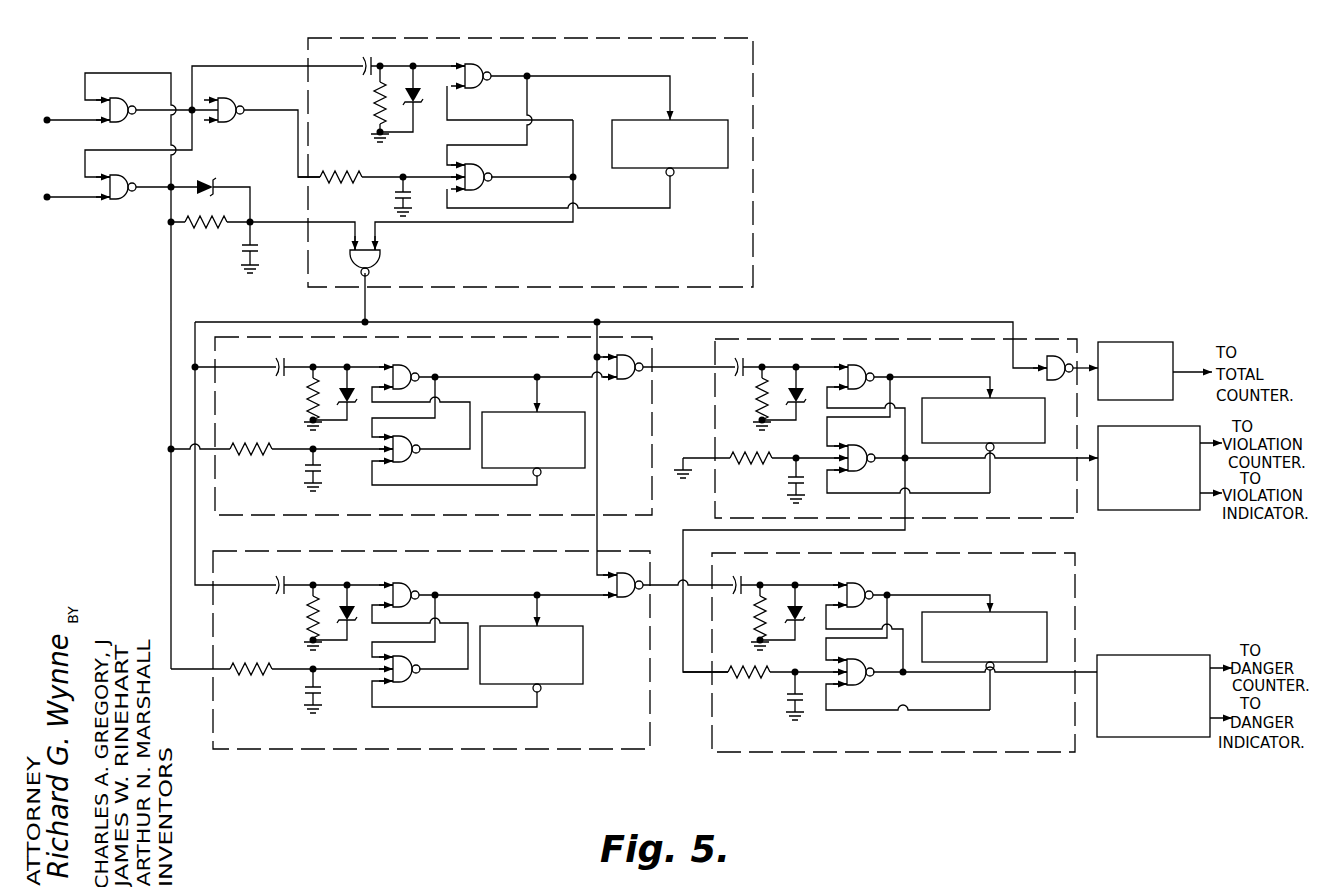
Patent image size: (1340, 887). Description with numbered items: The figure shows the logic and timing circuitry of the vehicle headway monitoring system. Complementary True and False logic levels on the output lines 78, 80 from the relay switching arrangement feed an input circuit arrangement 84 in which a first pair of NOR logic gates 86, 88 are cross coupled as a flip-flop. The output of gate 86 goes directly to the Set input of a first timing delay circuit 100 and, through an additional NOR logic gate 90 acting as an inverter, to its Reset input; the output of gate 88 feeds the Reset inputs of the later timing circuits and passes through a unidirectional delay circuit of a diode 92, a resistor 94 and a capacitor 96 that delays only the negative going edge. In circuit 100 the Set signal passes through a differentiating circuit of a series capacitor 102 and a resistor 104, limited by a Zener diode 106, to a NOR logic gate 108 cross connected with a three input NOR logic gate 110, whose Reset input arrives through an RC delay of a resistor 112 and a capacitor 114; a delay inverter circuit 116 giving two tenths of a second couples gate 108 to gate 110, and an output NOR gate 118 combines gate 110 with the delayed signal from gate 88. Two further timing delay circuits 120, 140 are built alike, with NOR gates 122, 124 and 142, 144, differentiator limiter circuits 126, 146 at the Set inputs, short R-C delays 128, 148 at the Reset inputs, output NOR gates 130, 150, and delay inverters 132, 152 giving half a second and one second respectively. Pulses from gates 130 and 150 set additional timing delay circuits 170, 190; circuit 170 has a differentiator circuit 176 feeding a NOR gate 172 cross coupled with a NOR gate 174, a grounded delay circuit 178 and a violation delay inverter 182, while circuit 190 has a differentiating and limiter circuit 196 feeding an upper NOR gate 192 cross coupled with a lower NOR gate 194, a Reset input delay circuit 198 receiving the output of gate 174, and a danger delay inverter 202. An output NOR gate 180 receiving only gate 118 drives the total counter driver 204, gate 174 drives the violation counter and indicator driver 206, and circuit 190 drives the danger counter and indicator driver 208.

The output line 78 is at (74, 116).
The output line 80 is at (84, 200).
The input circuit arrangement 84 is at (167, 70).
The NOR logic gate 86 is at (127, 114).
The NOR logic gate 88 is at (126, 180).
The NOR logic gate 90 is at (248, 92).
The diode 92 is at (207, 182).
The resistor 94 is at (217, 228).
The capacitor 96 is at (257, 257).
The first timing delay circuit 100 is at (628, 268).
The series capacitor 102 is at (374, 64).
The resistor 104 is at (374, 113).
The Zener diode 106 is at (413, 116).
The NOR logic gate 108 is at (491, 74).
The NOR logic gate 110 is at (491, 172).
The resistor 112 is at (355, 184).
The capacitor 114 is at (394, 200).
The delay inverter circuit 116 is at (622, 104).
The output NOR gate 118 is at (380, 258).
The timing delay circuit 120 is at (518, 364).
The NOR gate 122 is at (402, 370).
The NOR gate 124 is at (410, 463).
The differentiator limiter circuit 126 is at (295, 390).
The R-C delay 128 is at (295, 463).
The output NOR gate 130 is at (625, 381).
The delay inverter 132 is at (546, 474).
The timing delay circuit 140 is at (545, 584).
The NOR gate 142 is at (403, 588).
The NOR gate 144 is at (407, 683).
The differentiator limiter circuit 146 is at (295, 607).
The R-C delay 148 is at (290, 690).
The output NOR gate 150 is at (622, 599).
The delay inverter 152 is at (552, 690).
The timing delay circuit 170 is at (975, 370).
The NOR gate 172 is at (848, 370).
The NOR gate 174 is at (856, 471).
The differentiator circuit 176 is at (753, 393).
The delay circuit 178 is at (774, 471).
The output NOR gate 180 is at (1078, 338).
The violation delay inverter 182 is at (1036, 398).
The timing delay circuit 190 is at (995, 584).
The NOR gate 192 is at (862, 588).
The NOR gate 194 is at (859, 685).
The differentiating and limiter circuit 196 is at (752, 612).
The Reset input delay circuit 198 is at (772, 694).
The danger delay inverter 202 is at (1020, 612).
The total counter driver 204 is at (1165, 344).
The violation counter and indicator driver 206 is at (1135, 510).
The danger counter and indicator driver 208 is at (1155, 655).